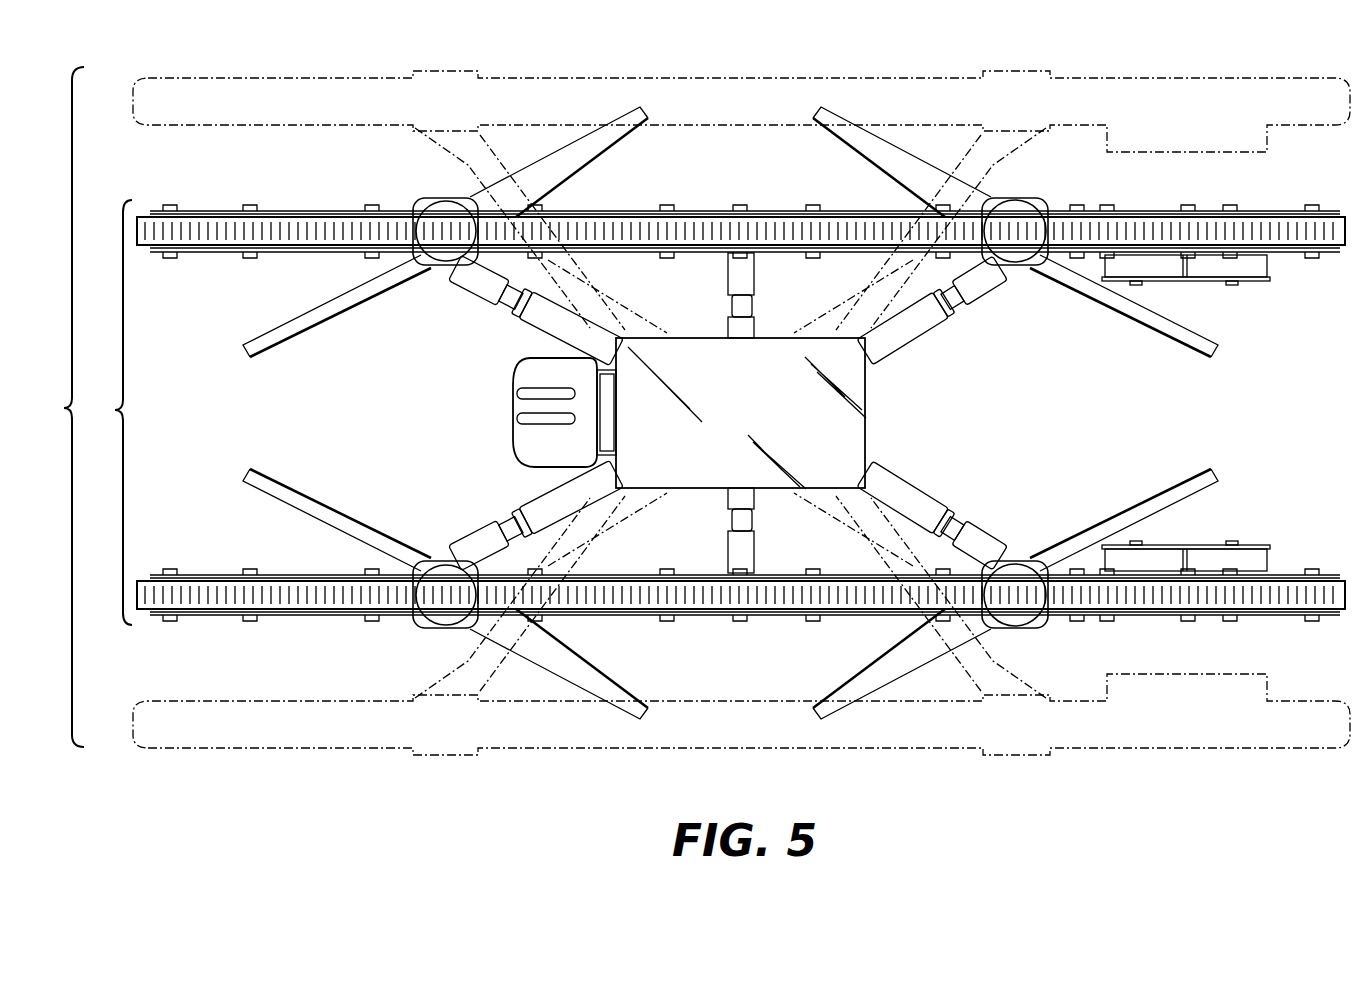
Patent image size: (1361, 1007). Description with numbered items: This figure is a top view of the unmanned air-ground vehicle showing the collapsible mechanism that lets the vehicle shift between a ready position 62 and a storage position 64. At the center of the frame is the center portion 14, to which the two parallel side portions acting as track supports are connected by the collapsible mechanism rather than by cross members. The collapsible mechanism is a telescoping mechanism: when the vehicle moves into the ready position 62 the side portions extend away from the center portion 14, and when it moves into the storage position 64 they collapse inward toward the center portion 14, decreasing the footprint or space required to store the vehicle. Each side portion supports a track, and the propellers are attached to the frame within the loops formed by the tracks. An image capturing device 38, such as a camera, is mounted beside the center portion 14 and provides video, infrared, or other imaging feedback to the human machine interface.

The center portion 14 is at (758, 425).
The image capturing device 38 is at (513, 370).
The ready position 62 is at (57, 407).
The storage position 64 is at (106, 412).